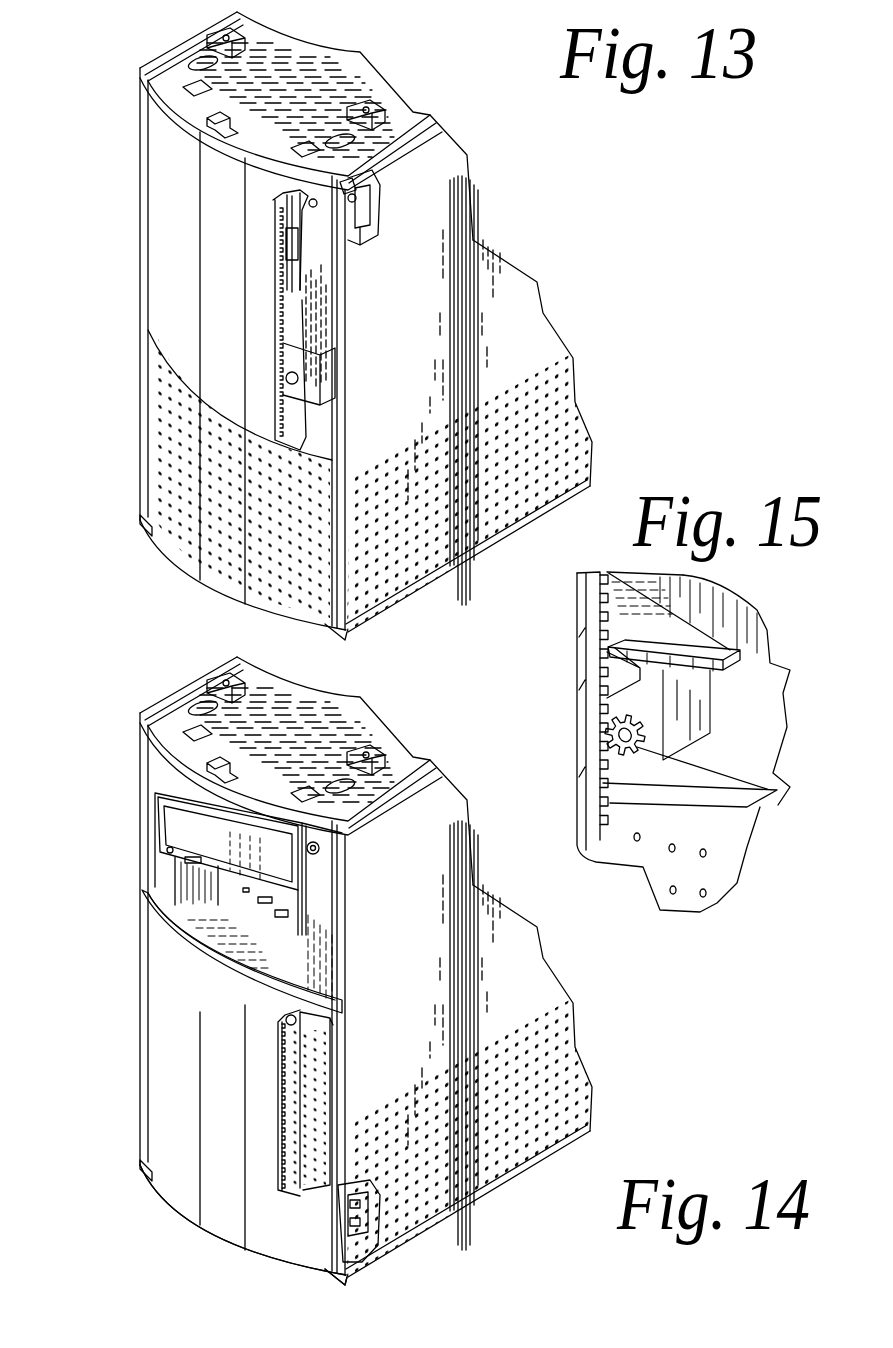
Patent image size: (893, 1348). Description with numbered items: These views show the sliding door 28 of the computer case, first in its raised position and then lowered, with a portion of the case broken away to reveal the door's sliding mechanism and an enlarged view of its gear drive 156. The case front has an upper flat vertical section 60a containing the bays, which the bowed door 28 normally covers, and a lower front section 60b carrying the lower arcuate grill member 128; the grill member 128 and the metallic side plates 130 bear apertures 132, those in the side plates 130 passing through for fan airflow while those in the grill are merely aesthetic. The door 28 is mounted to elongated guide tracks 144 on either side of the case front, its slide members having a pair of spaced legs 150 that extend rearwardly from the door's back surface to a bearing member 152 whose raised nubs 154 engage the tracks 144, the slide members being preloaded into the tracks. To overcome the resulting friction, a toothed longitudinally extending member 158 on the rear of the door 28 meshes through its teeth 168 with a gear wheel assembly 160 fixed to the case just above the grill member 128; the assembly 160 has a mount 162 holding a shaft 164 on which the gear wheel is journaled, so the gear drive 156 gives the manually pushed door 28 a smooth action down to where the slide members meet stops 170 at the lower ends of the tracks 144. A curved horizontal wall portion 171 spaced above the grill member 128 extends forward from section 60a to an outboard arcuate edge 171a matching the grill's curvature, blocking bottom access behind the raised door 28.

In FIG. 13, the door 28 is at (165, 222).
In FIG. 13, the lower arcuate grill member 128 is at (200, 527).
In FIG. 14, the lower arcuate grill member 128 is at (157, 1107).
In FIG. 13, the guide tracks 144 is at (372, 205).
In FIG. 13, the raised nubs 154 is at (348, 187).
In FIG. 14, the raised nubs 154 is at (347, 1233).
In FIG. 14, the side plates 130 is at (170, 785).
In FIG. 14, the apertures 132 is at (160, 850).
In FIG. 14, the curved horizontal wall portion 171 is at (193, 963).
In FIG. 14, the outboard arcuate edge 171a is at (158, 917).
In FIG. 15, the toothed longitudinally extending member 158 is at (590, 688).
In FIG. 14, the toothed longitudinally extending member 158 is at (273, 1072).
In FIG. 14, the upper flat vertical section 60a is at (322, 897).
In FIG. 14, the lower front section 60b is at (260, 1262).
In FIG. 14, the legs 150 is at (380, 1217).
In FIG. 14, the bearing member 152 is at (360, 1210).
In FIG. 14, the stops 170 is at (343, 1263).
In FIG. 15, the gear drive 156 is at (647, 767).
In FIG. 15, the gear wheel assembly 160 is at (650, 721).
In FIG. 15, the mount 162 is at (625, 677).
In FIG. 15, the shaft 164 is at (777, 790).
In FIG. 15, the teeth 168 is at (605, 782).